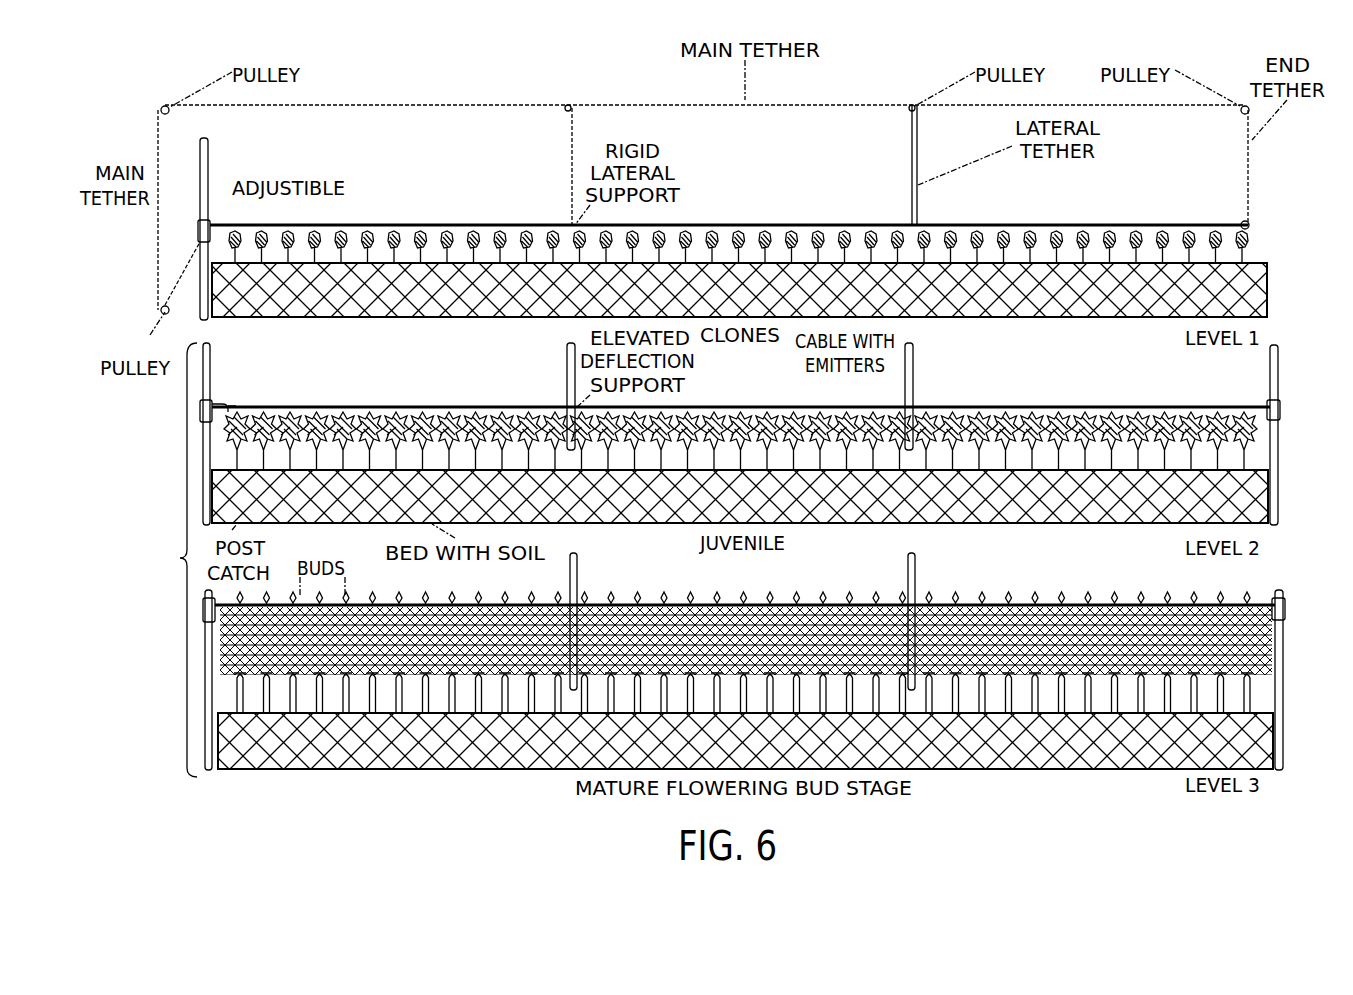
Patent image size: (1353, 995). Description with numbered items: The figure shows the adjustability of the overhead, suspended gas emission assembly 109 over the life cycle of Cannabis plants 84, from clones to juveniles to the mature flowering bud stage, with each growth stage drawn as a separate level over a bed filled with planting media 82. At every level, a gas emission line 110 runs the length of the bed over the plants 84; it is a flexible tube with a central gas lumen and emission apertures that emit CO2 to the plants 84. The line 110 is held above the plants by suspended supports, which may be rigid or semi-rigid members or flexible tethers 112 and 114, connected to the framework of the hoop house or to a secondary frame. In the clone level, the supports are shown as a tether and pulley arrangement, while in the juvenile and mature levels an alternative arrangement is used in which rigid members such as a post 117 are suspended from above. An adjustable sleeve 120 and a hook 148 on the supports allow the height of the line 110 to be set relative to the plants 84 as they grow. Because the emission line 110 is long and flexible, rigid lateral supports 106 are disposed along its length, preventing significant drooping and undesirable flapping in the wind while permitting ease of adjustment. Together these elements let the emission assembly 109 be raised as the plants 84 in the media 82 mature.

The flexible tether 112 is at (282, 469).
The post 117 is at (212, 355).
The adjustable sleeve 120 is at (211, 226).
The hook 148 is at (277, 385).
The rigid lateral support 106 is at (576, 132).
The gas emission line 110 is at (386, 224).
The planting media 82 is at (1076, 318).
The plants 84 is at (436, 232).
The flexible tether 114 is at (1279, 365).
The gas emission assembly 109 is at (171, 560).